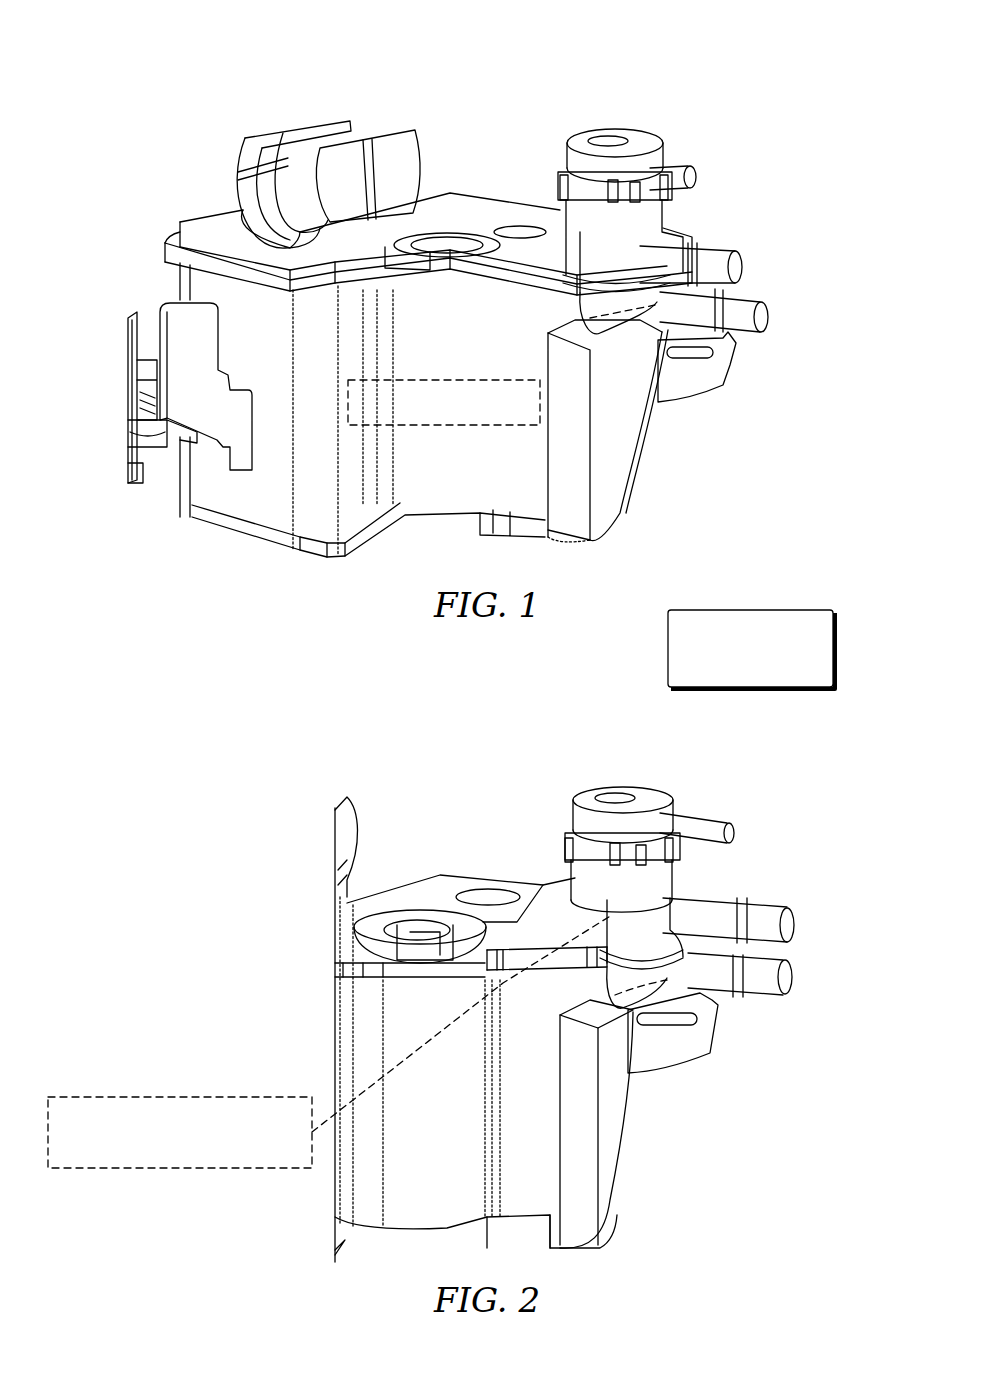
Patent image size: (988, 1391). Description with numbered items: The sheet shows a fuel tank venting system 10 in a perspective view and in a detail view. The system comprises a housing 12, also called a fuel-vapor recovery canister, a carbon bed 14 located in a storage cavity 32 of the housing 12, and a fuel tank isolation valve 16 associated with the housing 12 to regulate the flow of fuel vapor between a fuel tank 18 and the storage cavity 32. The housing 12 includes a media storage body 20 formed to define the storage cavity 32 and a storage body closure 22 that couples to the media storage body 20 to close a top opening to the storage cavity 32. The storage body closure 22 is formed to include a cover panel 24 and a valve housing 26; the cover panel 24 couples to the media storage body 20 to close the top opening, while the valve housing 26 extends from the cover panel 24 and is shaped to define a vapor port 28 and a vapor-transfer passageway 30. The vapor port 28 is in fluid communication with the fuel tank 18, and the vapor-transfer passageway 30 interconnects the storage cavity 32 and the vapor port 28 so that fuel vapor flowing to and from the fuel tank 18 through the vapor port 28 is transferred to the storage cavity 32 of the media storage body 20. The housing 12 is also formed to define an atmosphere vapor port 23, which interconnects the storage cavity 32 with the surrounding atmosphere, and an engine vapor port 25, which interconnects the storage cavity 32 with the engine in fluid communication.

In FIG. 1, the fuel tank venting system 10 is at (869, 192).
In FIG. 1, the housing 12 is at (289, 104).
In FIG. 1, the carbon bed 14 is at (523, 428).
In FIG. 1, the fuel tank isolation valve 16 is at (833, 100).
In FIG. 1, the fuel tank 18 is at (734, 266).
In FIG. 2, the fuel tank 18 is at (843, 969).
In FIG. 1, the media storage body 20 is at (595, 699).
In FIG. 2, the media storage body 20 is at (326, 1047).
In FIG. 1, the storage body closure 22 is at (620, 17).
In FIG. 2, the storage body closure 22 is at (165, 607).
In FIG. 2, the atmosphere vapor port 23 is at (404, 930).
In FIG. 2, the cover panel 24 is at (110, 833).
In FIG. 2, the engine vapor port 25 is at (803, 984).
In FIG. 2, the valve housing 26 is at (393, 677).
In FIG. 2, the vapor port 28 is at (823, 782).
In FIG. 2, the vapor-transfer passageway 30 is at (175, 1170).
In FIG. 1, the storage cavity 32 is at (668, 645).